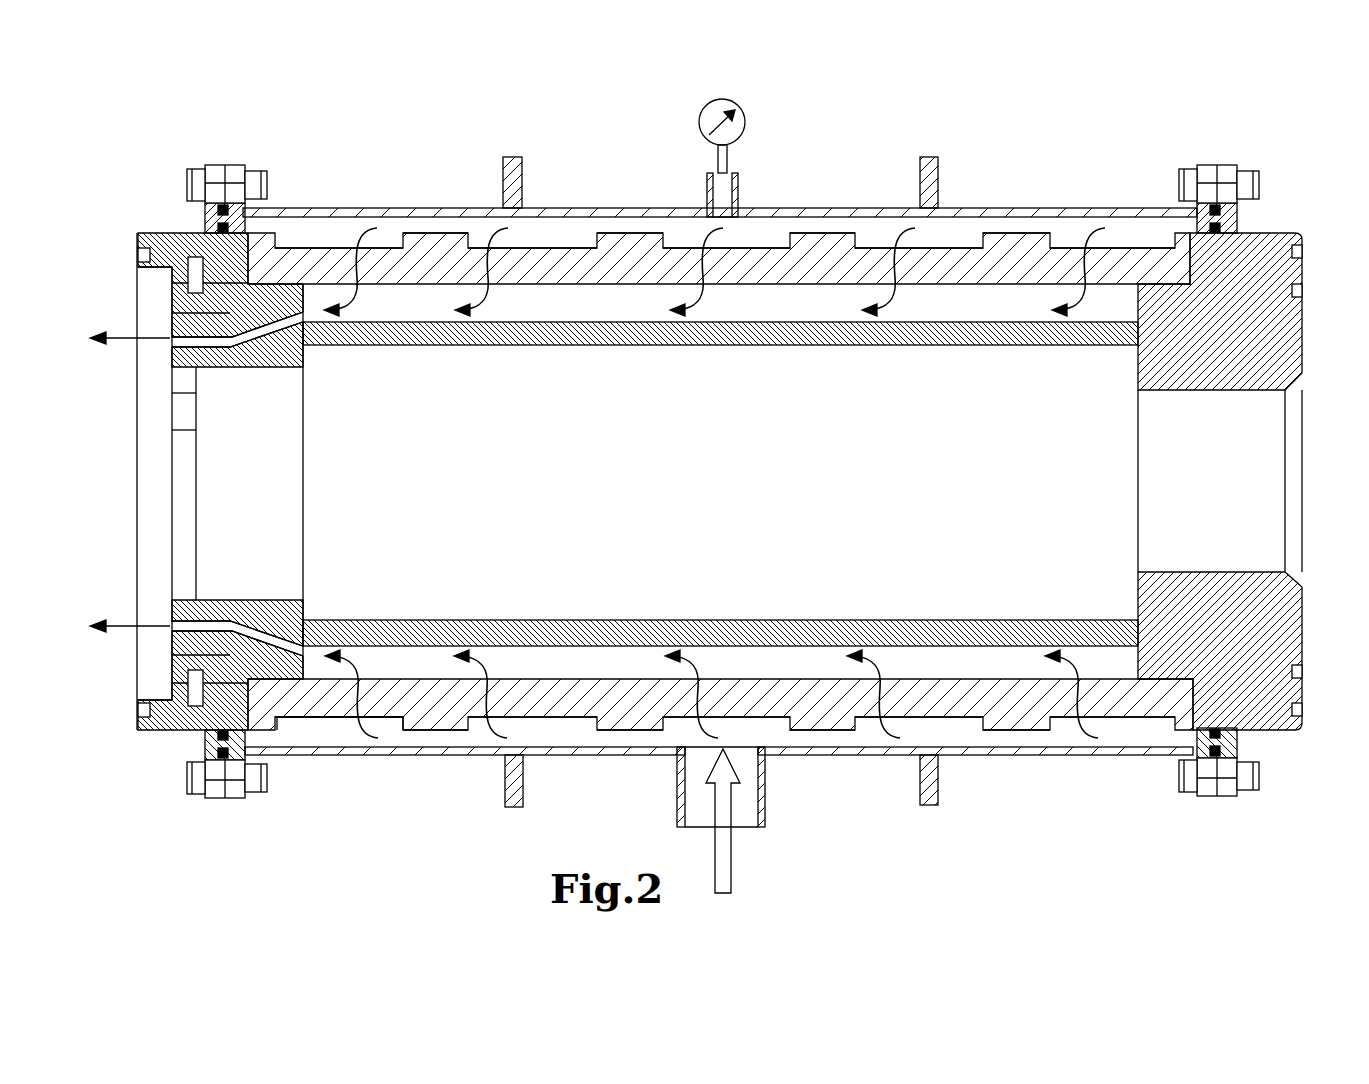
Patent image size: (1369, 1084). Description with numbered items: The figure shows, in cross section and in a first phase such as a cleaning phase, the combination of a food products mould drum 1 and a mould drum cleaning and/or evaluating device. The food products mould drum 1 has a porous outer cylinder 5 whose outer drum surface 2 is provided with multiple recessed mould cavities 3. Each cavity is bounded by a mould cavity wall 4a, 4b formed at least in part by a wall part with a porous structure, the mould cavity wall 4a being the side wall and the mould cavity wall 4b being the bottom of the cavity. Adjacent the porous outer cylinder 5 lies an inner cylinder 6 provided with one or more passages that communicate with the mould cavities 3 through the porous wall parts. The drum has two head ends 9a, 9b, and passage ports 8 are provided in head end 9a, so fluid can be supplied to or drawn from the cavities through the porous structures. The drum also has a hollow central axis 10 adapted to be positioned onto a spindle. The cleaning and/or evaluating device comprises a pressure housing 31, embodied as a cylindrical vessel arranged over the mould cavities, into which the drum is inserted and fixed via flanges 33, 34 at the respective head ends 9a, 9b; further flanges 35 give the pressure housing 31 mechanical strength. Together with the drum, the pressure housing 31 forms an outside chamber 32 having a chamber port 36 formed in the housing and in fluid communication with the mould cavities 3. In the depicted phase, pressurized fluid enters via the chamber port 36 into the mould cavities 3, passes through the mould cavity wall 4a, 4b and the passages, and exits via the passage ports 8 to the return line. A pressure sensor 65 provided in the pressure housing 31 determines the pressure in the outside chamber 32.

The food products mould drum 1 is at (116, 463).
The outer drum surface 2 is at (625, 230).
The mould cavities 3 is at (320, 240).
The mould cavity wall 4a is at (287, 722).
The mould cavity wall 4b is at (318, 722).
The porous outer cylinder 5 is at (845, 262).
The inner cylinder 6 is at (1112, 327).
The passage ports 8 is at (163, 345).
The head end 9a is at (173, 320).
The head end 9b is at (1272, 358).
The hollow central axis 10 is at (720, 481).
The pressure housing 31 is at (1062, 748).
The outside chamber 32 is at (1120, 730).
The flange 33 is at (228, 183).
The flange 34 is at (1225, 185).
The flanges 35 is at (517, 783).
The chamber port 36 is at (743, 795).
The pressure sensor 65 is at (728, 155).